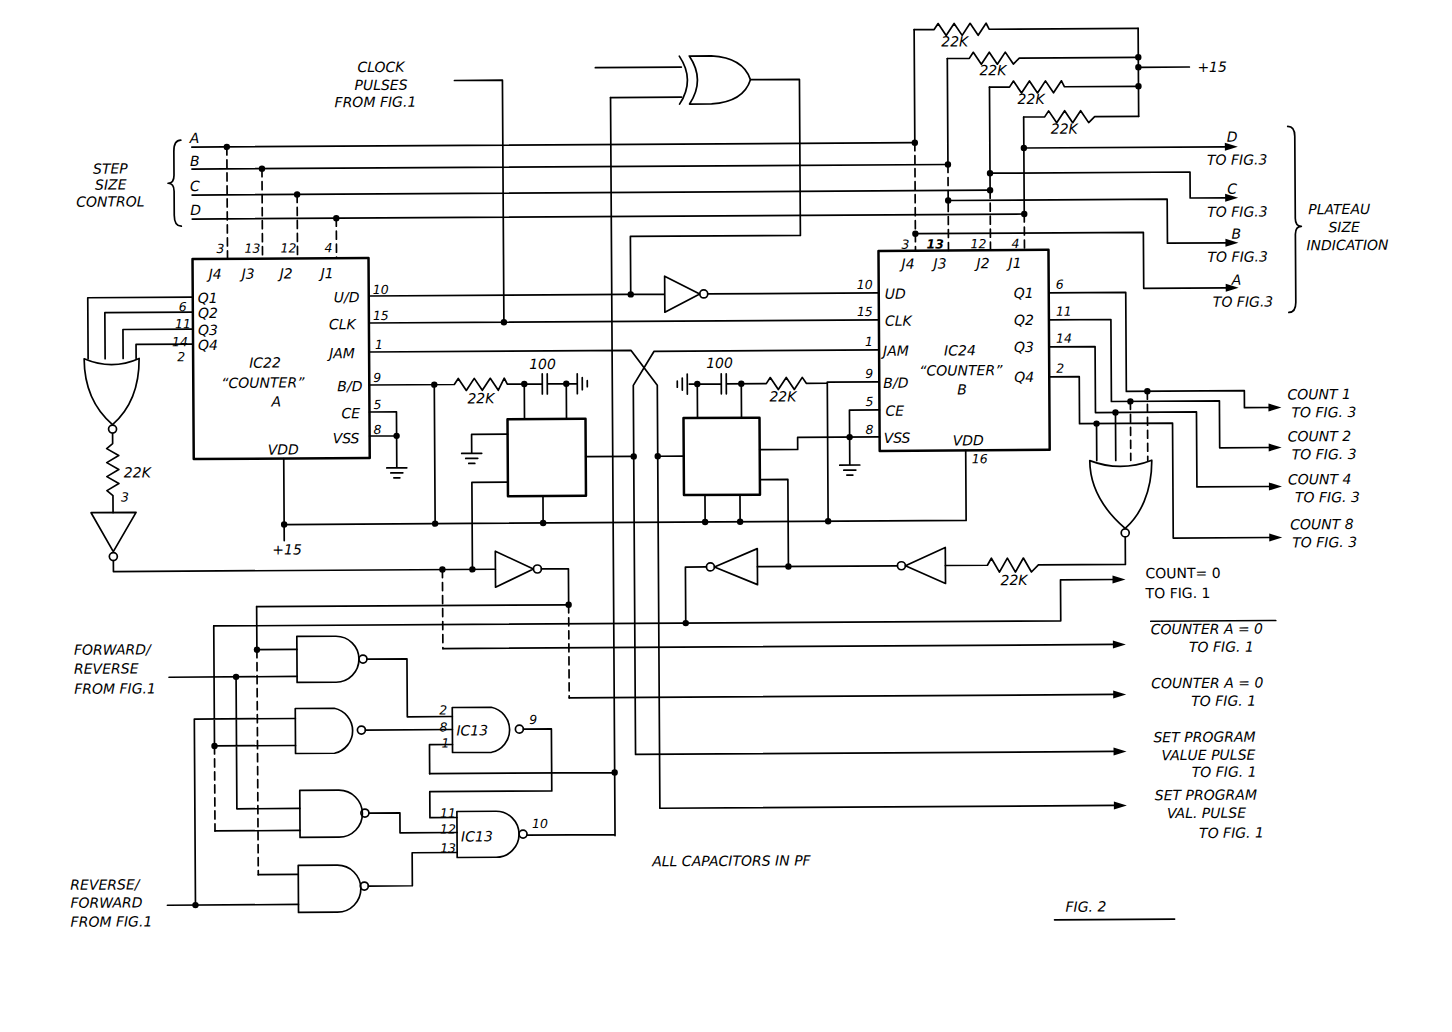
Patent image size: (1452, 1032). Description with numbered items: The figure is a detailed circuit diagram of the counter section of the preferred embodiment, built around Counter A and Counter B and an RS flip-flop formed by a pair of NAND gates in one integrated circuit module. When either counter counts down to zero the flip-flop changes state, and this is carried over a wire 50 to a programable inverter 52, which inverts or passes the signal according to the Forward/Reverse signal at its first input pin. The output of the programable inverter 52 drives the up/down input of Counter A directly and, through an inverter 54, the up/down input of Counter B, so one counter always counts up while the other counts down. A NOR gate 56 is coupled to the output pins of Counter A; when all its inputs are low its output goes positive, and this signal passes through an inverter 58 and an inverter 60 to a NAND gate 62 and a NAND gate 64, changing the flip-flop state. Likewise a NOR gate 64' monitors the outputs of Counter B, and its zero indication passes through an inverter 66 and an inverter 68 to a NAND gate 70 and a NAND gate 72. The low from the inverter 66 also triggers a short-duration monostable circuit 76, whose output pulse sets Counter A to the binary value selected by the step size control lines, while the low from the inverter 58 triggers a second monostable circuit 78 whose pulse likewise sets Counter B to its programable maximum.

The wire 50 is at (615, 751).
The programable inverter 52 is at (736, 57).
The inverter 54 is at (692, 283).
The NOR gate 56 is at (136, 400).
The inverter 58 is at (128, 532).
The inverter 60 is at (493, 578).
The NAND gate 62 is at (350, 680).
The NAND gate 64 is at (367, 888).
The NOR gate 64' is at (1097, 469).
The inverter 66 is at (925, 583).
The inverter 68 is at (755, 580).
The NAND gate 70 is at (350, 751).
The NAND gate 72 is at (352, 835).
The monostable circuit 76 is at (762, 465).
The monostable circuit 78 is at (508, 420).